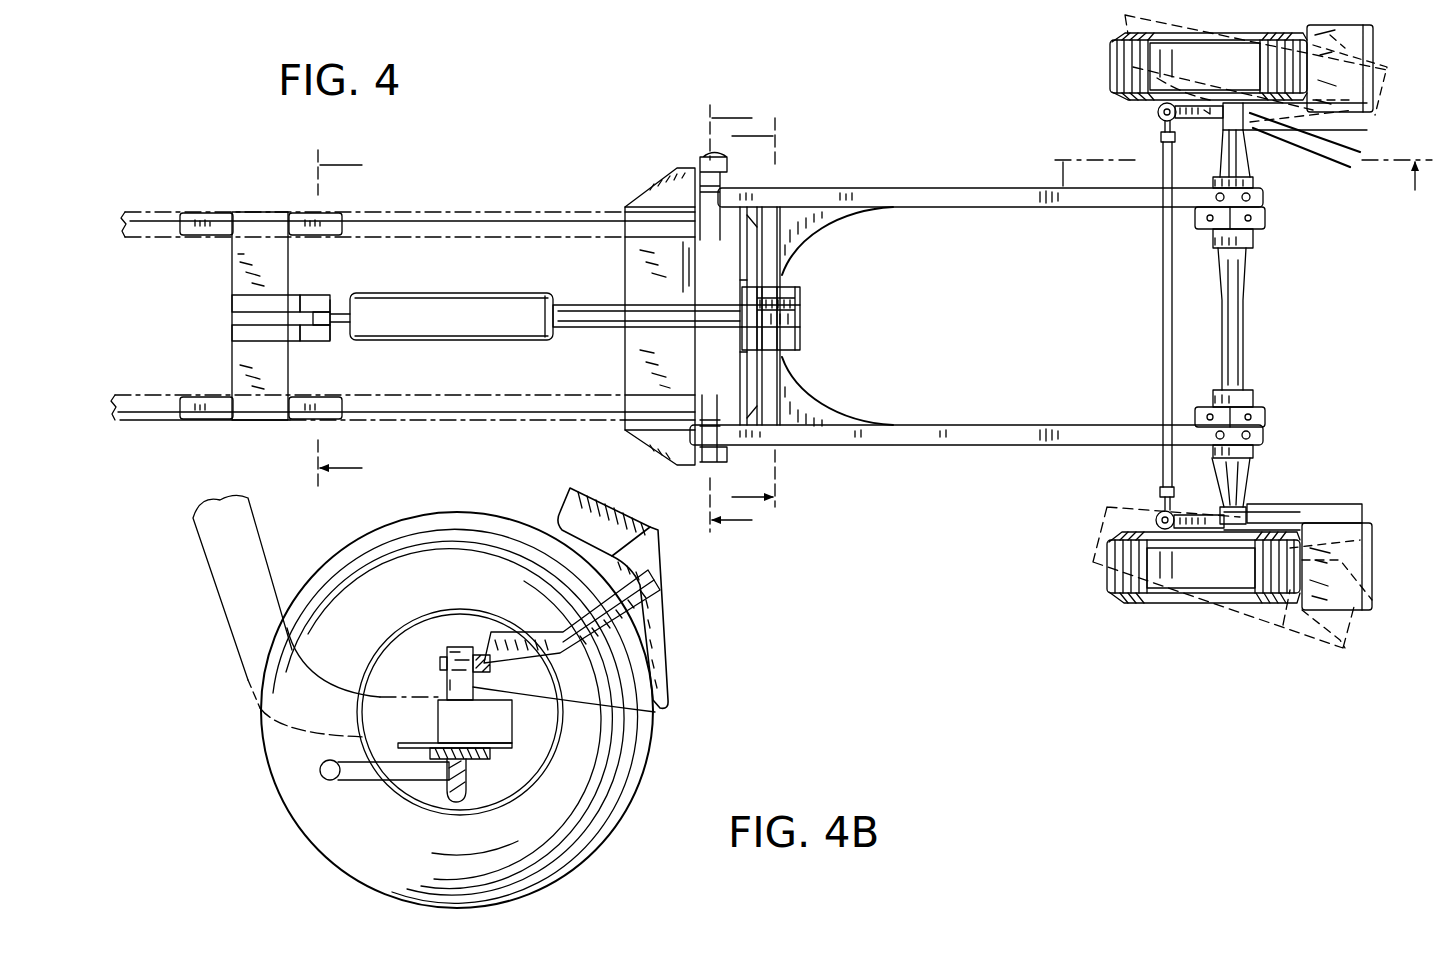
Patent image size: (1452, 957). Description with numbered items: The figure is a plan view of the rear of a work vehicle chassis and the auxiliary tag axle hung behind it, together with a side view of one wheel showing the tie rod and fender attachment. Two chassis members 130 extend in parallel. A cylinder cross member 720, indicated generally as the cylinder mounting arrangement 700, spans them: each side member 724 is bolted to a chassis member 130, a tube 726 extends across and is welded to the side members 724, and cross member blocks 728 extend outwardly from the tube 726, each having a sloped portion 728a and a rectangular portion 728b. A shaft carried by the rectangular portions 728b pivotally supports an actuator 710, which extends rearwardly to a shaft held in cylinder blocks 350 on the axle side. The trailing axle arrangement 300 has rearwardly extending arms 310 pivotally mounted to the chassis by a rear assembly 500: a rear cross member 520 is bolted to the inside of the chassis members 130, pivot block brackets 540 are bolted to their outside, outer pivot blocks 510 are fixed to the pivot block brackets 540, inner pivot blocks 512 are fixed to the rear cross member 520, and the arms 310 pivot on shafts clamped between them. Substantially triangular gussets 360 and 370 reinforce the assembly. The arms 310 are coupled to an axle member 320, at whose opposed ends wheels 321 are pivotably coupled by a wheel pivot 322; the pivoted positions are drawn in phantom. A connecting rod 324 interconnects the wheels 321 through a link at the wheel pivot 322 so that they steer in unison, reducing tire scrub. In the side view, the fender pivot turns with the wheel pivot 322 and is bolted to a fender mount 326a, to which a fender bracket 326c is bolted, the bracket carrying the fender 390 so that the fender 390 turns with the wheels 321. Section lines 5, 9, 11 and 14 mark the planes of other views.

In FIG. 4, the chassis members 130 is at (500, 226).
In FIG. 4, the trailer frame assembly 300 is at (910, 450).
In FIG. 4, the rearwardly extending arms 310 is at (1058, 448).
In FIG. 4B, the rearwardly extending arms 310 is at (235, 606).
In FIG. 4, the axle member 320 is at (1250, 372).
In FIG. 4, the wheels 321 is at (1112, 56).
In FIG. 4B, the wheels 321 is at (578, 842).
In FIG. 4B, the wheel pivot 322 is at (478, 690).
In FIG. 4, the connecting rod 324 is at (1160, 346).
In FIG. 4B, the connecting rod 324 is at (330, 778).
In FIG. 4B, the fender mount 326a is at (475, 688).
In FIG. 4B, the fender bracket 326c is at (643, 637).
In FIG. 4, the cylinder blocks 350 is at (802, 334).
In FIG. 4, the gusset 360 is at (832, 207).
In FIG. 4, the gusset 370 is at (770, 202).
In FIG. 4, the fender 390 is at (1372, 42).
In FIG. 4B, the fender 390 is at (566, 513).
In FIG. 4, the rear assembly 500 is at (612, 445).
In FIG. 4, the outer pivot blocks 510 is at (713, 160).
In FIG. 4, the inner pivot blocks 512 is at (690, 266).
In FIG. 4, the rear cross member 520 is at (642, 226).
In FIG. 4, the pivot block brackets 540 is at (655, 190).
In FIG. 4, the cart 700 is at (266, 434).
In FIG. 4, the actuator 710 is at (500, 310).
In FIG. 4, the cylinder cross member 720 is at (230, 208).
In FIG. 4, the side members 724 is at (341, 228).
In FIG. 4, the tube 726 is at (272, 228).
In FIG. 4, the cross member blocks 728 is at (308, 293).
In FIG. 4, the sloped portion 728a is at (245, 330).
In FIG. 4, the rectangular portion 728b is at (322, 338).
In FIG. 4, the section line 5 is at (720, 321).
In FIG. 4, the section line 9 is at (765, 315).
In FIG. 4, the section line 11 is at (326, 320).
In FIG. 4, the section line 14 is at (1243, 158).